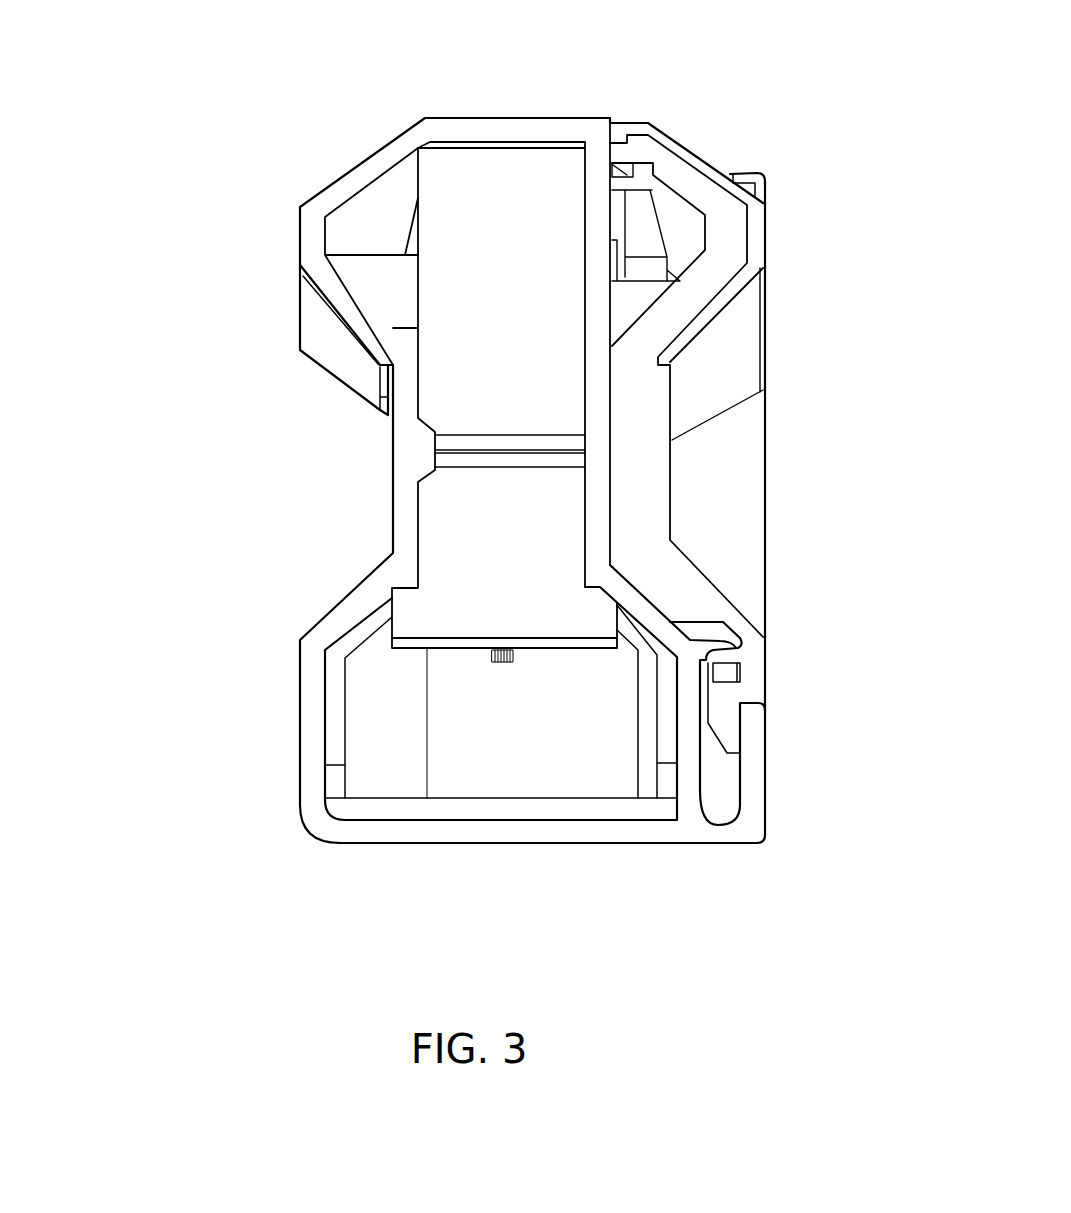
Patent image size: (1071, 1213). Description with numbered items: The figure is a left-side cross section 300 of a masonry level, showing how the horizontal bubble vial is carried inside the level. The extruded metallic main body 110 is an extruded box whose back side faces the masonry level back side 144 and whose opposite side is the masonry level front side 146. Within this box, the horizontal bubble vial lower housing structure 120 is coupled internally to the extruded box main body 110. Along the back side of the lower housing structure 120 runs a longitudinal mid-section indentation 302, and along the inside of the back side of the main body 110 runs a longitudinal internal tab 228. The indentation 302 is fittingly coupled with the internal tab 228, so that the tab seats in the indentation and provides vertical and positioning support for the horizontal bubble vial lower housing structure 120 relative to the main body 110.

The cross section 300 is at (813, 77).
The extruded metallic main body 110 is at (472, 870).
The horizontal bubble vial lower housing structure 120 is at (532, 162).
The masonry level back side 144 is at (172, 483).
The masonry level front side 146 is at (843, 480).
The extruded box main body back side longitudinal internal tab 228 is at (435, 448).
The lower housing structure back side longitudinal mid-section indentation 302 is at (425, 477).